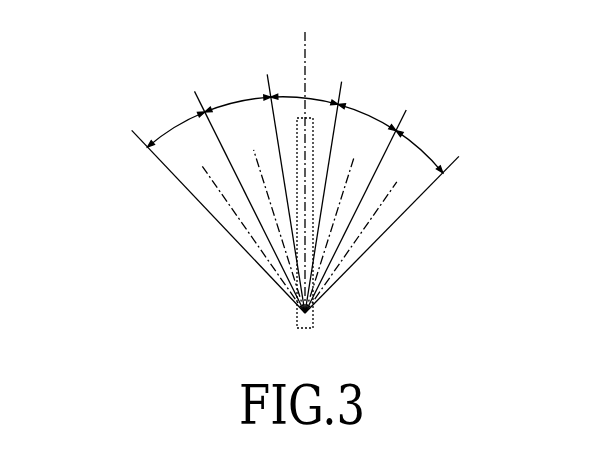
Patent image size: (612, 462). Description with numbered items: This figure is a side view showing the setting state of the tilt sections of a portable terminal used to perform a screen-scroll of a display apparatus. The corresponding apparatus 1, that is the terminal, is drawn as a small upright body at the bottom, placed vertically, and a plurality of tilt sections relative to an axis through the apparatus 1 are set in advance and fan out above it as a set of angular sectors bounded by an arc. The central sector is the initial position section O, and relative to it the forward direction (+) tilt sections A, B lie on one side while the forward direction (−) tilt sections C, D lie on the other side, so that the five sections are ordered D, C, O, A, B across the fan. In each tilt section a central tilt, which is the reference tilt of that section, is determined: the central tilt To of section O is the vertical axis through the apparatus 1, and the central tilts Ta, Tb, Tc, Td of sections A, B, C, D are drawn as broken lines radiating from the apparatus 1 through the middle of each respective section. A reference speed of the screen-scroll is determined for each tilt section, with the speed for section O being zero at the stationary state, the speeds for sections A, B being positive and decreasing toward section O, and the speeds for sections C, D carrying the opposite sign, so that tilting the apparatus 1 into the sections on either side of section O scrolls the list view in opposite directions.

The corresponding apparatus 1 is at (313, 328).
The section O is at (304, 193).
The section A is at (355, 201).
The section B is at (382, 219).
The section C is at (250, 196).
The section D is at (218, 208).
The central tilt of section O To is at (305, 159).
The central tilt of section A Ta is at (334, 220).
The central tilt of section B Tb is at (359, 235).
The central tilt of section C Tc is at (273, 219).
The central tilt of section D Td is at (246, 228).